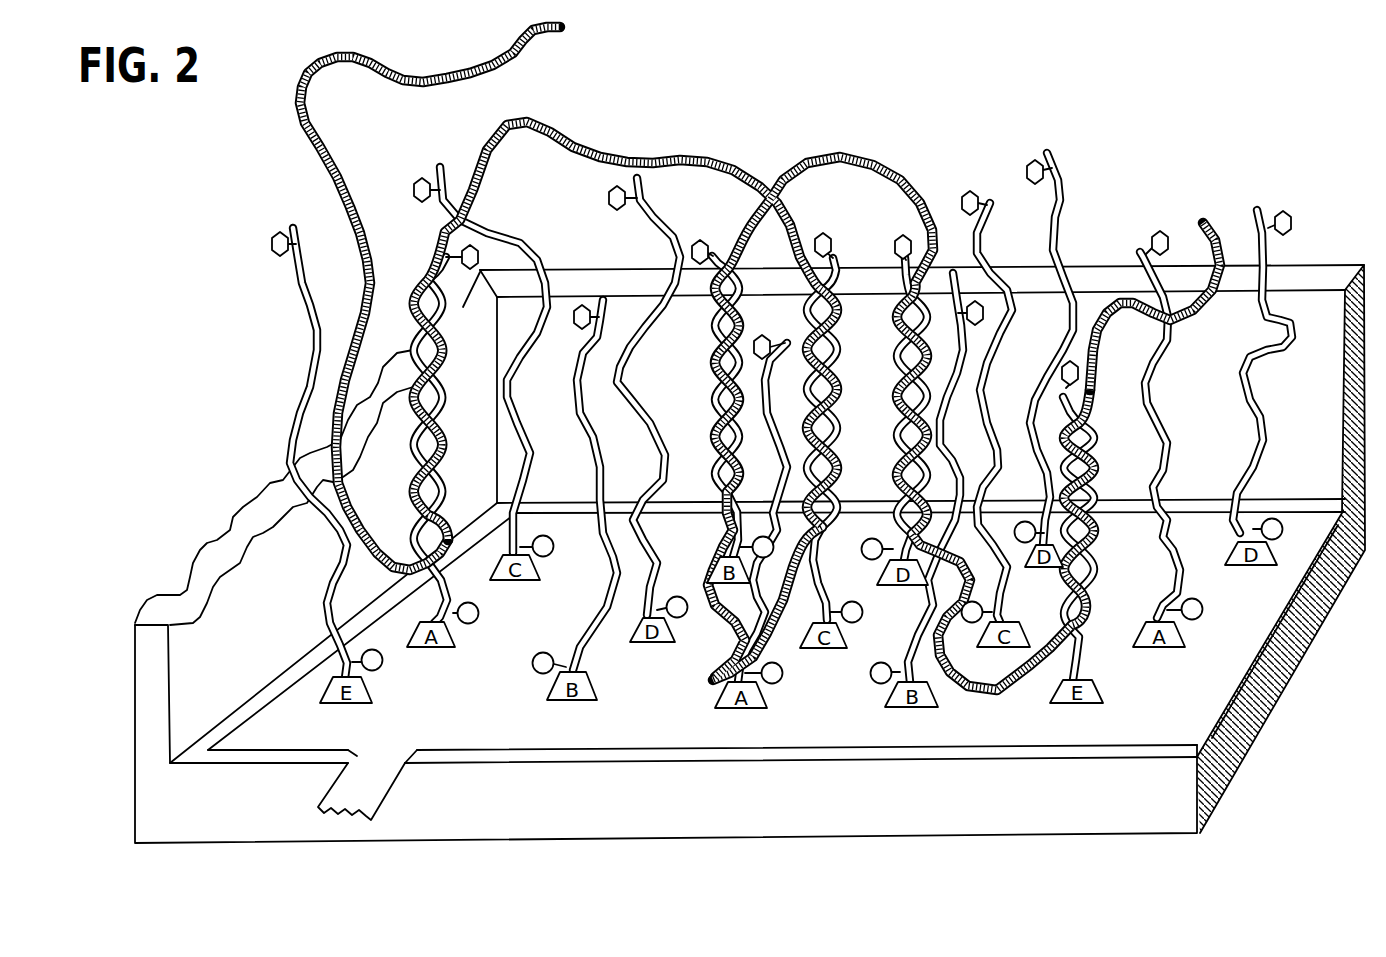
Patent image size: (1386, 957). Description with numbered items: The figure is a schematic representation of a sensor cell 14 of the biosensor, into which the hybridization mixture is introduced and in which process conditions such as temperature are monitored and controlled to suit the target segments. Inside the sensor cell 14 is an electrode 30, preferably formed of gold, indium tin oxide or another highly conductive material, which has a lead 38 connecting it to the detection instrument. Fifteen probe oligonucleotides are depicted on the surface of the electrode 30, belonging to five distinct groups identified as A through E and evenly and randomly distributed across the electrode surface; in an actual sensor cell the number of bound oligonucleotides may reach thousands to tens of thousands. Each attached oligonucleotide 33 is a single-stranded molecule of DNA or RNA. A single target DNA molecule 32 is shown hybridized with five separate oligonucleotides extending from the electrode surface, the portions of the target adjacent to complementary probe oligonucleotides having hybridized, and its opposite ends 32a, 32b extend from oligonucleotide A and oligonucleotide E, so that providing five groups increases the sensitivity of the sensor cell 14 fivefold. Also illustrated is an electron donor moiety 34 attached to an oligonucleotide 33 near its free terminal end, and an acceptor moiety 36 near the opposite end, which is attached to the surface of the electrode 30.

The sensor cell 14 is at (1317, 307).
The electrode 30 is at (1210, 703).
The target DNA molecule 32 is at (580, 143).
The first end of target strand 32a is at (300, 117).
The second end of target strand 32b is at (1217, 230).
The oligonucleotide 33 is at (290, 433).
The electron donor moiety 34 is at (277, 260).
The acceptor moiety 36 is at (380, 670).
The lead 38 is at (370, 792).